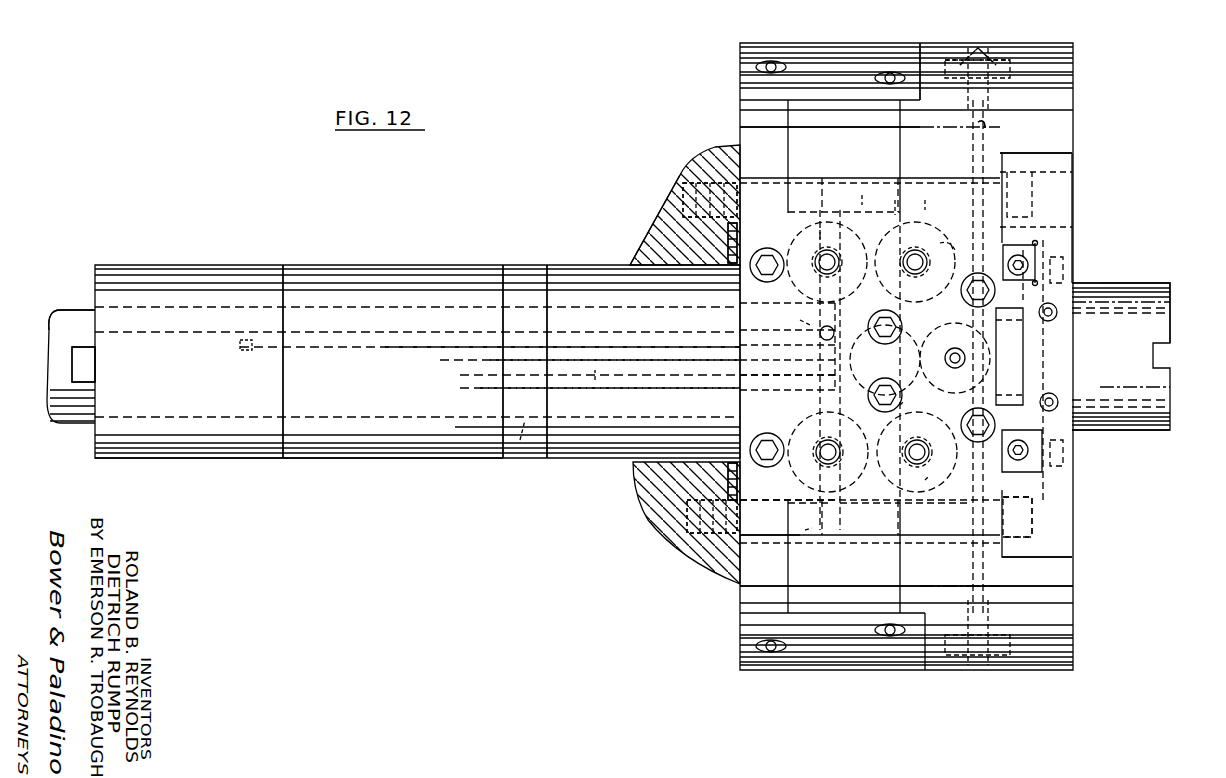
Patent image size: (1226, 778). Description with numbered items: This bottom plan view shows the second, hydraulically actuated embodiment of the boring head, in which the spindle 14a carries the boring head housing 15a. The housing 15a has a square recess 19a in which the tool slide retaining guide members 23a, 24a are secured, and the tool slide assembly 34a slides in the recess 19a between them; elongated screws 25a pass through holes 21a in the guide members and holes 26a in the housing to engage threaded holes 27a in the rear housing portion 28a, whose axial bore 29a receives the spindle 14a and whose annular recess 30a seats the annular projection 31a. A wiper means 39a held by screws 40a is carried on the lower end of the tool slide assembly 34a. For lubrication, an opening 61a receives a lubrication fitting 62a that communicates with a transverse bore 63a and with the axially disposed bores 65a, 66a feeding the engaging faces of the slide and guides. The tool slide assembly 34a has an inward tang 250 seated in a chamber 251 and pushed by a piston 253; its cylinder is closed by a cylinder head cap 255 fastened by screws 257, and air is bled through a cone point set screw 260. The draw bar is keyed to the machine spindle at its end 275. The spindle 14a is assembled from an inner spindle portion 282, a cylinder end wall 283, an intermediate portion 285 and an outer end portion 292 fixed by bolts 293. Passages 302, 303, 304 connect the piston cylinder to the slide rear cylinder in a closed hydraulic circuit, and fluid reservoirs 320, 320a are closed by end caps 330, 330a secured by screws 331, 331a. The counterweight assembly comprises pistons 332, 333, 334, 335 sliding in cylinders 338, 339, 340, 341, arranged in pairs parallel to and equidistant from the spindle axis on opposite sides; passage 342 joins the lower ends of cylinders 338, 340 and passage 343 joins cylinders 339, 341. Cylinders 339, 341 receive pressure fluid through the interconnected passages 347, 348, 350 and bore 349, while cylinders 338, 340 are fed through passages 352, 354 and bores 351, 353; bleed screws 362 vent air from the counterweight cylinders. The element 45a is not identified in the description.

The spindle 14a is at (312, 462).
The boring head housing 15a is at (930, 55).
The square recess 19a is at (1065, 175).
The holes 21a is at (1055, 540).
The tool slide retaining guide member 23a is at (1062, 555).
The tool slide retaining guide member 24a is at (1065, 163).
The elongated screw 25a is at (1040, 512).
The hole 26a is at (805, 530).
The threaded hole 27a is at (680, 195).
The boring head rear housing portion 28a is at (655, 520).
The axial bore 29a is at (655, 455).
The annular recess 30a is at (730, 480).
The annular projection 31a is at (722, 460).
The tool slide assembly 34a is at (1075, 283).
The wiper means 39a is at (1072, 430).
The screws 40a is at (1049, 395).
The output shaft 45a is at (1150, 298).
The opening 61a is at (1000, 50).
The lubrication fitting 62a is at (977, 48).
The transverse bore 63a is at (985, 128).
The axially disposed bore 65a is at (925, 480).
The axially disposed bore 66a is at (959, 234).
The tang 250 is at (882, 380).
The chamber 251 is at (830, 340).
The piston 253 is at (1040, 418).
The cylinder head cap 255 is at (785, 535).
The screws 257 is at (767, 262).
The cone point set screw 260 is at (960, 356).
The spindle end 275 is at (80, 315).
The inner spindle portion 282 is at (560, 460).
The cylinder end wall 283 is at (540, 460).
The spindle intermediate portion 285 is at (395, 460).
The spindle outer end portion 292 is at (225, 455).
The bolts 293 is at (90, 357).
The passage 302 is at (957, 348).
The passage 303 is at (597, 380).
The passage 304 is at (495, 360).
The hydraulic fluid reservoir 320 is at (793, 140).
The fluid reservoir 320a is at (895, 582).
The end cap 330 is at (783, 665).
The end cap 330a is at (888, 72).
The screws 331 is at (890, 632).
The screws 331a is at (775, 63).
The counterweight piston 332 is at (895, 200).
The counterweight piston 333 is at (870, 515).
The counterweight piston 334 is at (820, 230).
The counterweight piston 335 is at (787, 487).
The cylinder 338 is at (925, 200).
The cylinder 339 is at (937, 515).
The cylinder 340 is at (855, 215).
The cylinder 341 is at (815, 513).
The passage 342 is at (830, 276).
The passage 343 is at (838, 435).
The passage 347 is at (465, 385).
The passage 348 is at (520, 440).
The bore 349 is at (787, 379).
The passage 350 is at (900, 405).
The bore 351 is at (240, 345).
The passage 352 is at (392, 347).
The bore 353 is at (800, 320).
The passage 354 is at (885, 315).
The bleed screws 362 is at (910, 260).